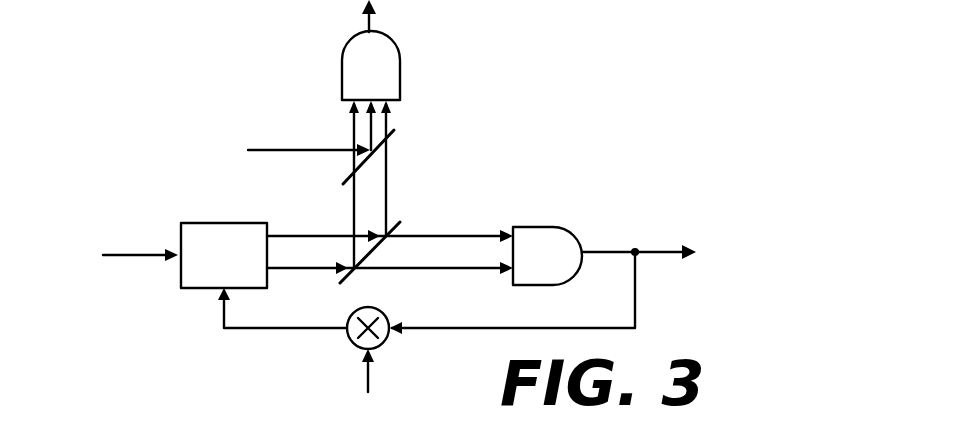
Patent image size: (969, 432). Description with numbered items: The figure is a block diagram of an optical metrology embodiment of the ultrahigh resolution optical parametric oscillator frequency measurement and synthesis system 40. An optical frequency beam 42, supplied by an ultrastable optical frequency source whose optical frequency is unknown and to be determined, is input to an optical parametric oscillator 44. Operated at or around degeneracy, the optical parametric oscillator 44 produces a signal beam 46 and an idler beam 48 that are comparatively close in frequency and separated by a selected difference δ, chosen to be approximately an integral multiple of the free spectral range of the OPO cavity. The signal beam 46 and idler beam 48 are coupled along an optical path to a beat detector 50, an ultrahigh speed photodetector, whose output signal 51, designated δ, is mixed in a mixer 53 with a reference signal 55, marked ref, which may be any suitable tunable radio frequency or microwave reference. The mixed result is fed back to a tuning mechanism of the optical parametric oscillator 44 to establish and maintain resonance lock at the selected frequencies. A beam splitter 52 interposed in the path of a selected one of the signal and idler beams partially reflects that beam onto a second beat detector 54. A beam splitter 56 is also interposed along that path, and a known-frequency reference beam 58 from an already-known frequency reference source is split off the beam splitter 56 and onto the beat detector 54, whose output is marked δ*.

The optical parametric oscillator frequency measurement and synthesis system 40 is at (241, 358).
The optical frequency beam 42 is at (118, 255).
The optical parametric oscillator 44 is at (207, 222).
The signal beam 46 is at (283, 236).
The idler beam 48 is at (315, 272).
The beat detector 50 is at (540, 227).
The output signal 51 is at (660, 252).
The beam splitter 52 is at (400, 222).
The mixer 53 is at (352, 343).
The beat detector 54 is at (400, 62).
The reference signal 55 is at (364, 380).
The beam splitter 56 is at (394, 130).
The known-frequency reference beam 58 is at (313, 150).